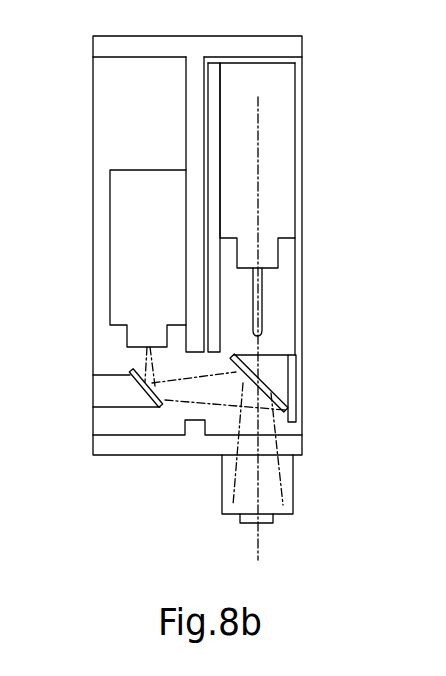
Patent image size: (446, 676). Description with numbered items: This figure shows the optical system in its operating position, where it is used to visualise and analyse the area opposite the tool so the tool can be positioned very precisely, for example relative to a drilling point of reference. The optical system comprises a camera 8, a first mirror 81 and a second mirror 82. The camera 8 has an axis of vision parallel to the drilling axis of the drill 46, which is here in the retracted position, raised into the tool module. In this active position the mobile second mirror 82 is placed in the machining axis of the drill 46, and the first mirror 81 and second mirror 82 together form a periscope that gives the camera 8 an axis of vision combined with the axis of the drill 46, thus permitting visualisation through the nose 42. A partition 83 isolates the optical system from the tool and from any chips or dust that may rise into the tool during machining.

The camera 8 is at (130, 245).
The drill 46 is at (280, 160).
The first mirror 81 is at (140, 390).
The second mirror 82 is at (266, 388).
The partition 83 is at (292, 400).
The nose 42 is at (268, 526).